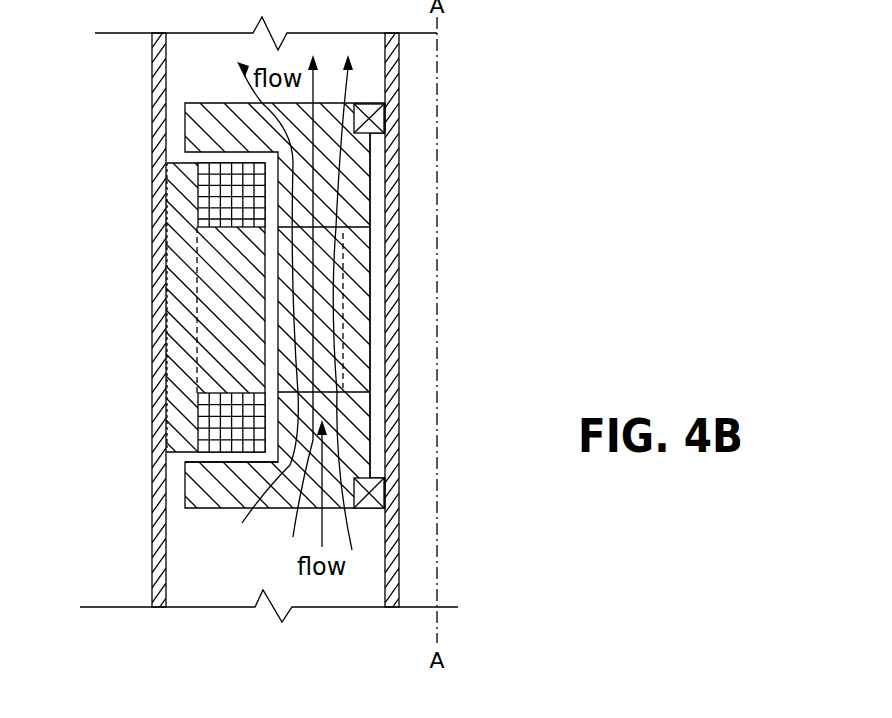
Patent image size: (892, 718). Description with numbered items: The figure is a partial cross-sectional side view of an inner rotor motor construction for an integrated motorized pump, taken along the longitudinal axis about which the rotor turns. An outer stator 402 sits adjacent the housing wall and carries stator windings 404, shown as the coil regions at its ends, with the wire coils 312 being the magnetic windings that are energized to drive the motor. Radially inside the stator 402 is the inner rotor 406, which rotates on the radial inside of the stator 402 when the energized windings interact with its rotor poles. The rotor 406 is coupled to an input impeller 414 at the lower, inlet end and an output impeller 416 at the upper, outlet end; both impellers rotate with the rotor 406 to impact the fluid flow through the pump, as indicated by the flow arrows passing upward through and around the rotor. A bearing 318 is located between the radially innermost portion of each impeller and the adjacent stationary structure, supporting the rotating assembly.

The wire coils 312 is at (230, 207).
The bearing 318 is at (368, 121).
The outer stator 402 is at (188, 350).
The stator windings 404 is at (217, 453).
The inner rotor 406 is at (372, 357).
The input impeller 414 is at (363, 438).
The output impeller 416 is at (360, 188).